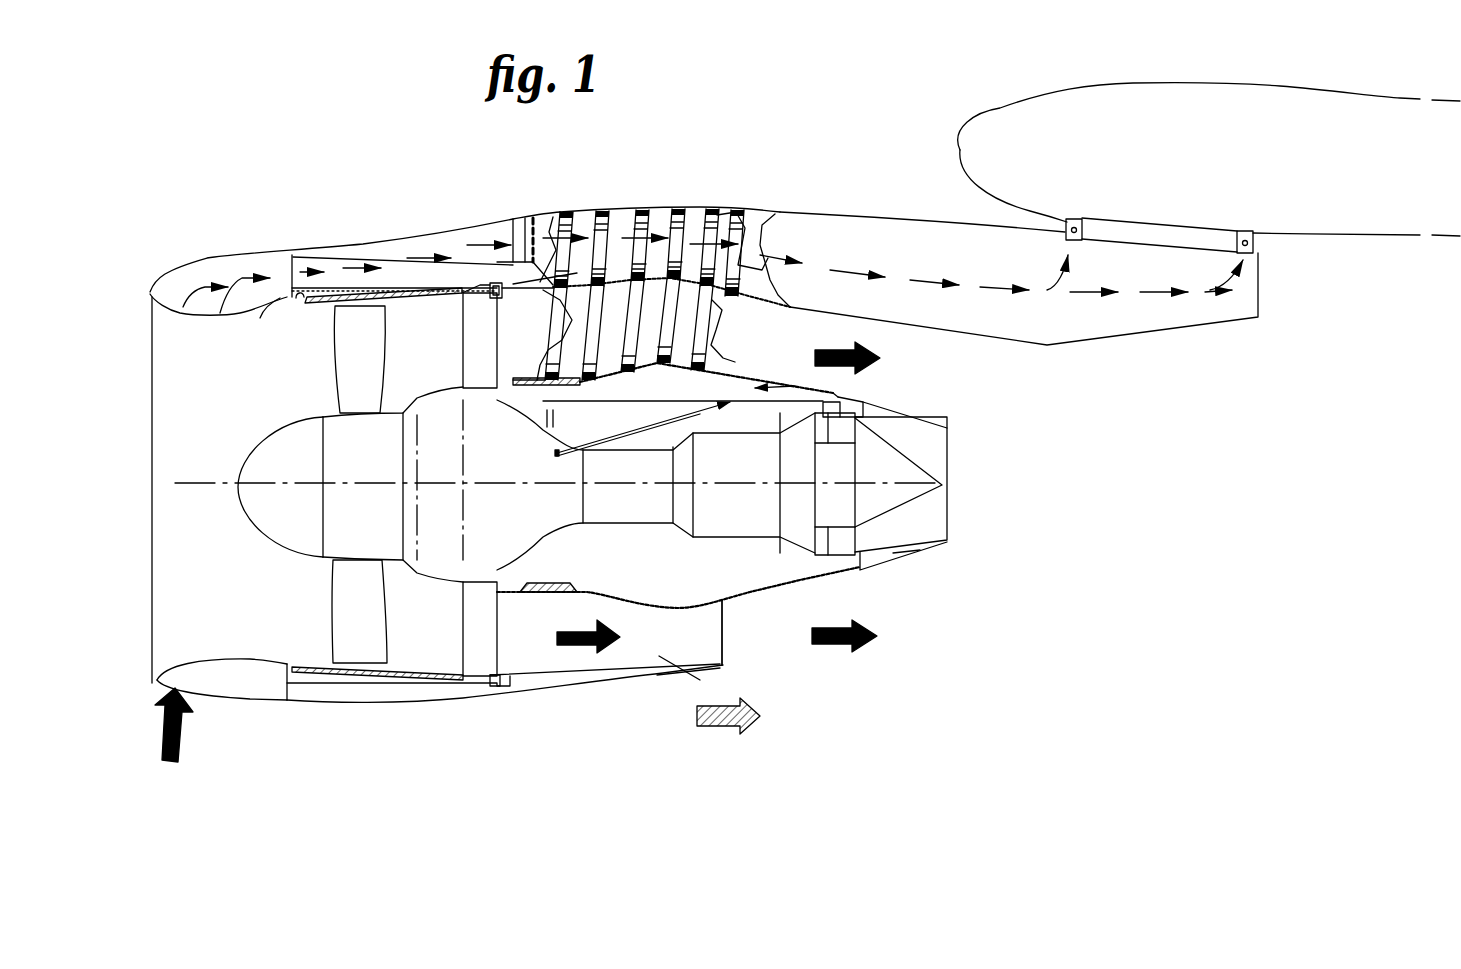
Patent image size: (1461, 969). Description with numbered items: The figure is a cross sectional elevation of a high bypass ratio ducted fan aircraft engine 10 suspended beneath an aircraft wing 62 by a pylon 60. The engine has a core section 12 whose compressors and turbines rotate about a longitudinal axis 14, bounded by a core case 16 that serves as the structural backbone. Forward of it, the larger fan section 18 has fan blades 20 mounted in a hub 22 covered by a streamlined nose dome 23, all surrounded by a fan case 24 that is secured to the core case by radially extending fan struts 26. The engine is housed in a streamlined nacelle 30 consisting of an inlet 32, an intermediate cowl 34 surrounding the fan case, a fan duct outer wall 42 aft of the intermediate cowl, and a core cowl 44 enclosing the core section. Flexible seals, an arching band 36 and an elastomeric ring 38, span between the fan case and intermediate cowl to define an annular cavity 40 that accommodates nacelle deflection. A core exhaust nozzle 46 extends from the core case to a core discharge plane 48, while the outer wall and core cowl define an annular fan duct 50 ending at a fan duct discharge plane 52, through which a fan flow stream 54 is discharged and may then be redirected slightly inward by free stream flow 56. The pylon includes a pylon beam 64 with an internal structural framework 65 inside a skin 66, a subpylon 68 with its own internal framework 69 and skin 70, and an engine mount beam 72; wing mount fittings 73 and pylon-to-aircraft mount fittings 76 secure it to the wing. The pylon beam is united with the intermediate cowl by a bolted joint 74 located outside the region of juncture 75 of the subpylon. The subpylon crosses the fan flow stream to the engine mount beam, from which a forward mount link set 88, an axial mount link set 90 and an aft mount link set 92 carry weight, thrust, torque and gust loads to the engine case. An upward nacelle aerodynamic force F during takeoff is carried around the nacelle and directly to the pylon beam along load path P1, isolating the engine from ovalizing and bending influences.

The high bypass ratio ducted fan aircraft engine 10 is at (910, 598).
The core section 12 is at (600, 772).
The longitudinal axis 14 is at (208, 483).
The core case 16 is at (560, 540).
The fan section 18 is at (283, 733).
The fan blades 20 is at (373, 349).
The hub 22 is at (384, 531).
The nose dome 23 is at (300, 516).
The fan case 24 is at (325, 300).
The fan struts 26 is at (496, 336).
The nacelle 30 is at (448, 712).
The inlet 32 is at (239, 689).
The intermediate cowl 34 is at (365, 690).
The arching band 36 is at (290, 297).
The elastomeric ring 38 is at (503, 295).
The annular cavity 40 is at (400, 296).
The fan duct outer wall 42 is at (537, 683).
The core cowl 44 is at (800, 587).
The core exhaust nozzle 46 is at (890, 553).
The core discharge plane 48 is at (950, 530).
The fan duct 50 is at (660, 656).
The fan duct discharge plane 52 is at (726, 645).
The fan flow stream 54 is at (855, 350).
The free stream flow 56 is at (715, 728).
The pylon 60 is at (1100, 353).
The aircraft wing 62 is at (1082, 153).
The pylon beam 64 is at (866, 225).
The internal structural framework 65 is at (672, 236).
The skin 66 is at (730, 235).
The subpylon 68 is at (722, 348).
The internal framework 69 is at (628, 342).
The skin 70 is at (705, 326).
The engine mount beam 72 is at (840, 393).
The wing mount fittings 73 is at (1243, 235).
The bolted joint 74 is at (530, 218).
The region of juncture 75 is at (603, 195).
The pylon-to-aircraft mount fittings 76 is at (1243, 253).
The forward mount link set 88 is at (547, 412).
The axial mount link set 90 is at (645, 425).
The aft mount link set 92 is at (823, 405).
The load path P1 is at (355, 270).
The nacelle aerodynamic force F is at (173, 741).